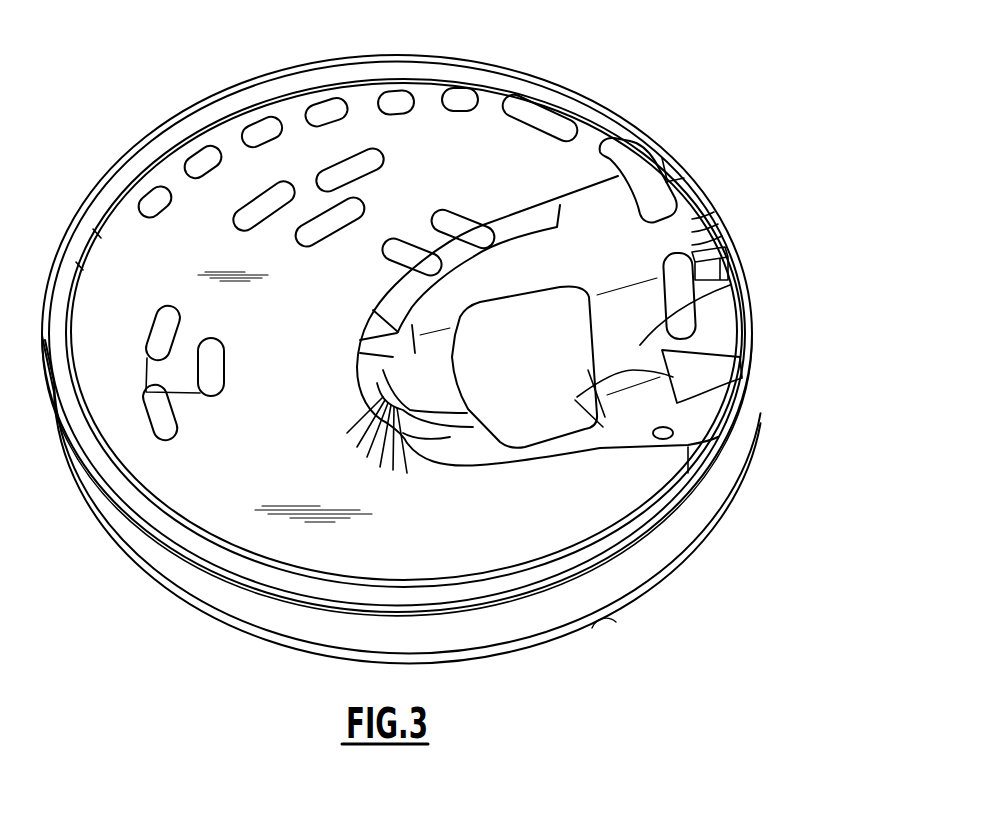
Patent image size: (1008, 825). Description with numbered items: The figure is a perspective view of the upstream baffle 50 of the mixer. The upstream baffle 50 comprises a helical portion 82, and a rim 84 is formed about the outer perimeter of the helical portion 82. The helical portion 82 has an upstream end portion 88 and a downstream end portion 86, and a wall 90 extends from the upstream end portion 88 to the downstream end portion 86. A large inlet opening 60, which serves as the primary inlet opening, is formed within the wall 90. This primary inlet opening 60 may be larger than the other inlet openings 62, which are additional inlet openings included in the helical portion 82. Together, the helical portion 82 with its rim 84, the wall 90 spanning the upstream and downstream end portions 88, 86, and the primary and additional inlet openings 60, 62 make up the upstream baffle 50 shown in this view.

The upstream baffle 50 is at (810, 191).
The large inlet opening 60 is at (705, 393).
The inlet openings 62 is at (465, 103).
The helical portion 82 is at (163, 283).
The rim 84 is at (267, 93).
The downstream end portion 86 is at (640, 490).
The upstream end portion 88 is at (458, 190).
The wall 90 is at (700, 294).